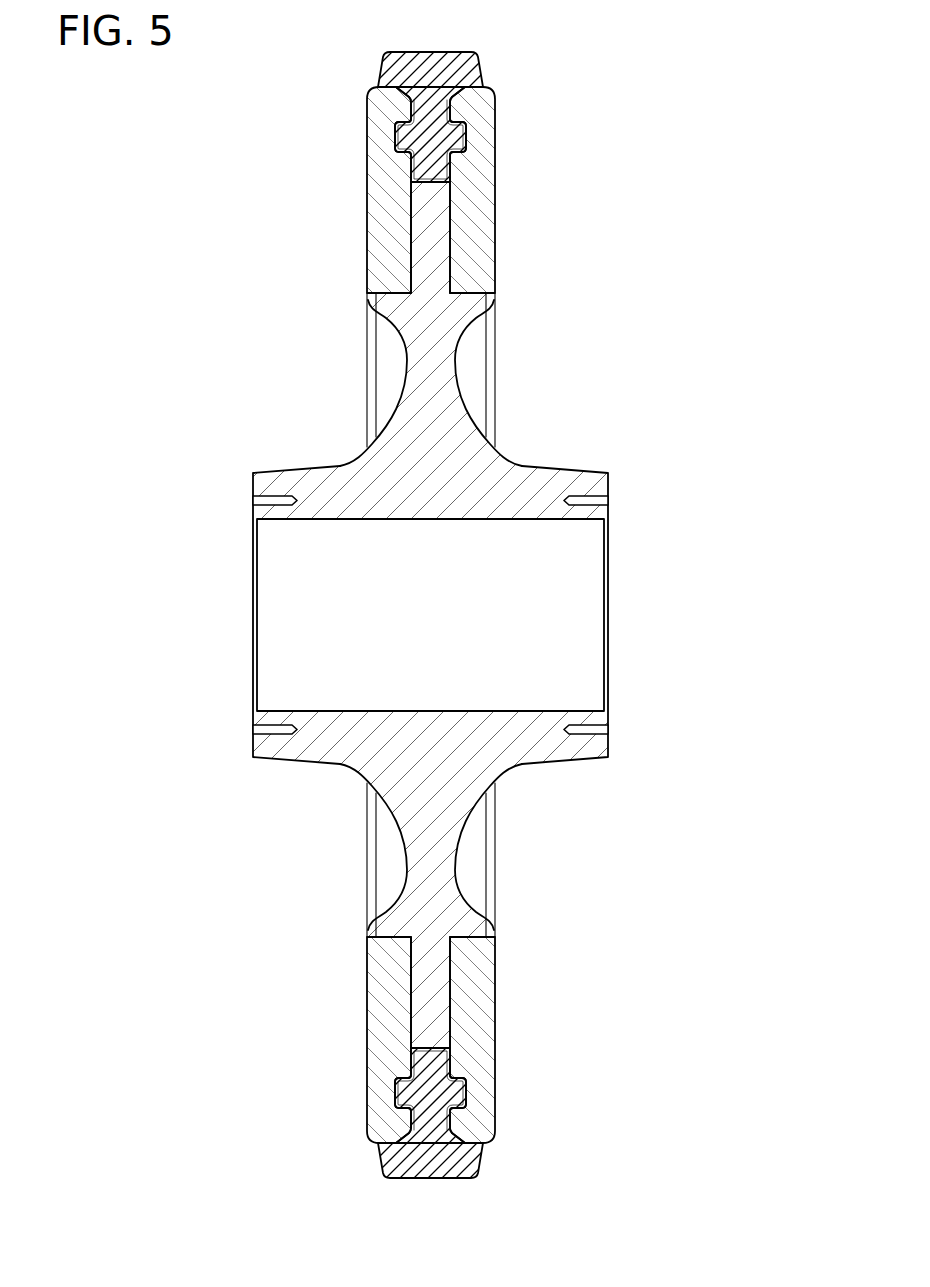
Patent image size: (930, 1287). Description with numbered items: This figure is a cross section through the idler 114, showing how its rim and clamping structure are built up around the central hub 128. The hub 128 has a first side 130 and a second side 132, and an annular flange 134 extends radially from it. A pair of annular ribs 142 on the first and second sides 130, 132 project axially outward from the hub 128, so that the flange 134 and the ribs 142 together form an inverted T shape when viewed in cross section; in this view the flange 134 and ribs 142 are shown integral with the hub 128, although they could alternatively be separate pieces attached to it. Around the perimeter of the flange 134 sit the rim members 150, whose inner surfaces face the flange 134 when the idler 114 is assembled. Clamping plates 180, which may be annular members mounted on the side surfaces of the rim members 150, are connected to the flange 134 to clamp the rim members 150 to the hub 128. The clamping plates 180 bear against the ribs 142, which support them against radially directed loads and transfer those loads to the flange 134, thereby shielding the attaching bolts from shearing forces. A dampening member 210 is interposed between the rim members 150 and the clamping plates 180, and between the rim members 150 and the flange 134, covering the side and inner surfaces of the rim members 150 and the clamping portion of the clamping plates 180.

The idler 114 is at (122, 237).
The hub 128 is at (457, 460).
The first side 130 is at (252, 742).
The second side 132 is at (608, 489).
The flange 134 is at (435, 233).
The annular ribs 142 is at (484, 308).
The rim members 150 is at (467, 69).
The clamping plates 180 is at (378, 210).
The dampening member 210 is at (467, 147).